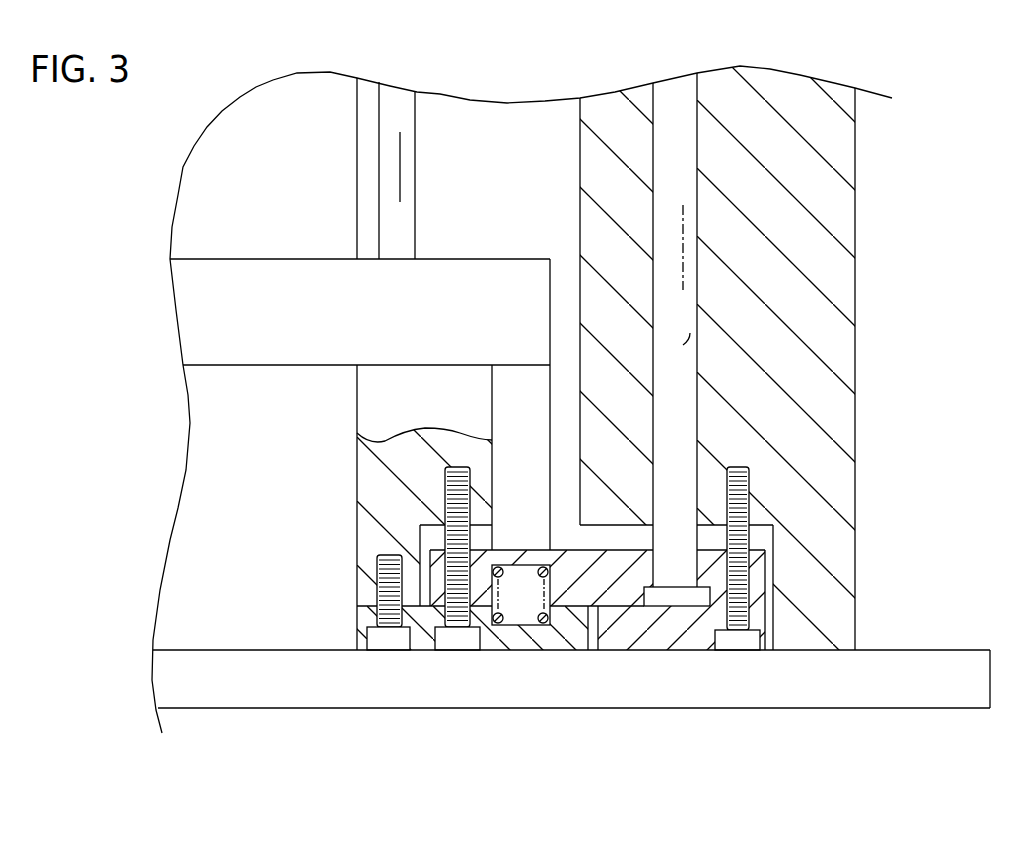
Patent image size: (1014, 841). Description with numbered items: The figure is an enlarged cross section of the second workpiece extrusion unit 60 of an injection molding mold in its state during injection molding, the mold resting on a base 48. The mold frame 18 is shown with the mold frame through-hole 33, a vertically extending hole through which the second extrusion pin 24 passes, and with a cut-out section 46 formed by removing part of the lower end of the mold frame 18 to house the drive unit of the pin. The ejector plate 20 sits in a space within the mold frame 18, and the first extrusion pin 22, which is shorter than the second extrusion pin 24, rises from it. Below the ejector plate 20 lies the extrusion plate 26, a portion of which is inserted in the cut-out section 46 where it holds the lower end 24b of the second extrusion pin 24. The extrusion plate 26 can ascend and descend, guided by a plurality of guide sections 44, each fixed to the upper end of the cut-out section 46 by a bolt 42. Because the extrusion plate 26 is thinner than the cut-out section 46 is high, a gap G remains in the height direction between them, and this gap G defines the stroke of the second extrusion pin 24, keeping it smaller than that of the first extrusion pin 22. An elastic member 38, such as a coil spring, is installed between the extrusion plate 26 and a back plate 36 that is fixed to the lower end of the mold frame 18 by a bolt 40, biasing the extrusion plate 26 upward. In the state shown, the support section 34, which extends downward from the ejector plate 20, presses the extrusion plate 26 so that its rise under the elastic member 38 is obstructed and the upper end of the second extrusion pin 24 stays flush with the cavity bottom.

The mold frame 18 is at (835, 209).
The ejector plate 20 is at (238, 280).
The first extrusion pin 22 is at (405, 212).
The second extrusion pin 24 is at (705, 178).
The lower end of the second extrusion pin 24b is at (690, 597).
The extrusion plate 26 is at (658, 632).
The mold frame through-hole 33 is at (697, 336).
The support section 34 is at (508, 396).
The back plate 36 is at (425, 627).
The elastic member 38 is at (538, 628).
The bolt 40 is at (376, 558).
The bolt 42 is at (445, 470).
The guide section 44 is at (445, 498).
The cut-out section 46 is at (600, 530).
The base 48 is at (251, 692).
The second workpiece extrusion unit 60 is at (803, 716).
The gap G is at (606, 545).